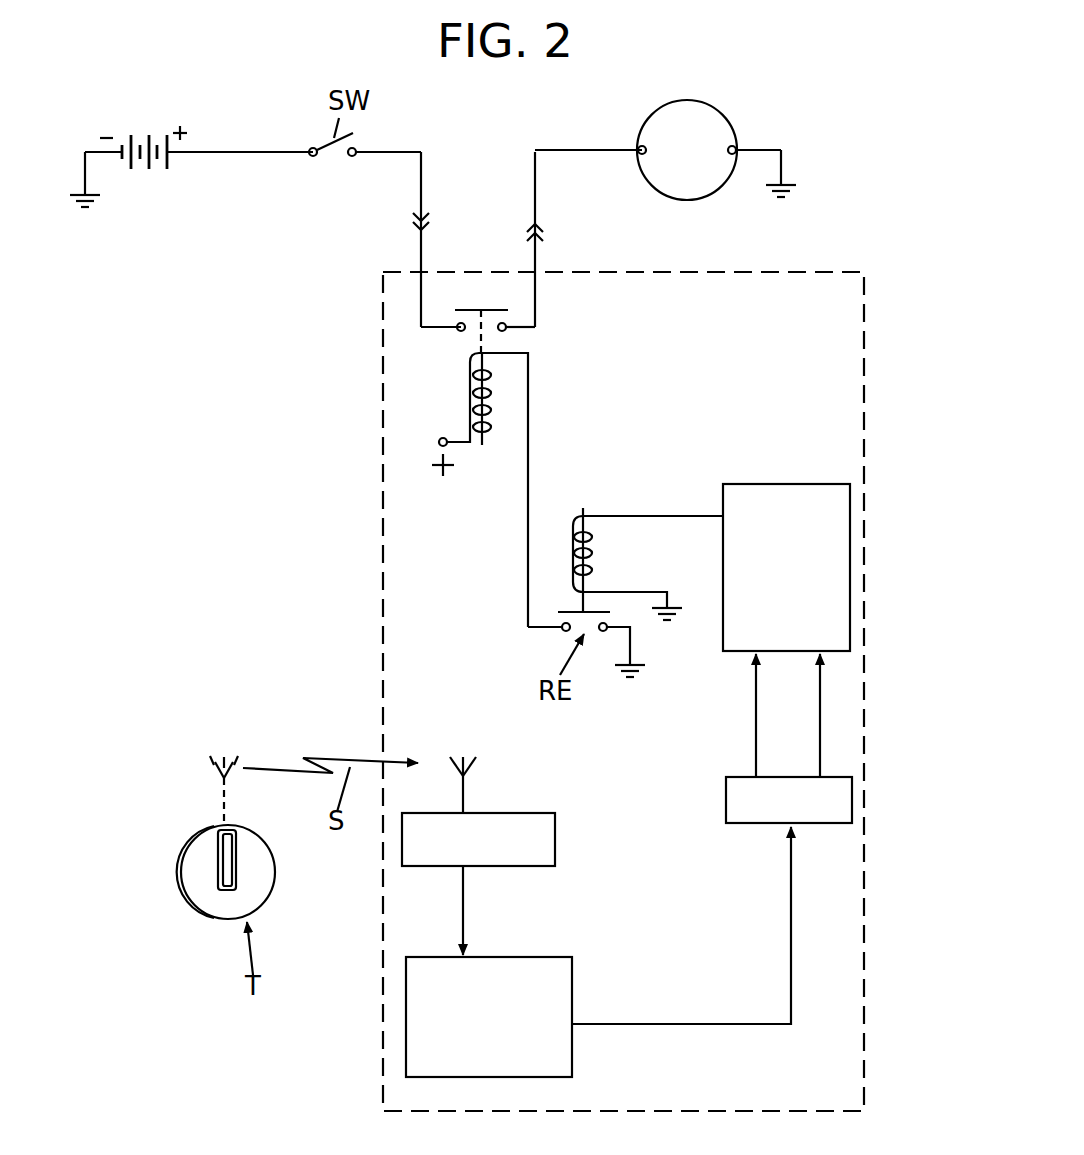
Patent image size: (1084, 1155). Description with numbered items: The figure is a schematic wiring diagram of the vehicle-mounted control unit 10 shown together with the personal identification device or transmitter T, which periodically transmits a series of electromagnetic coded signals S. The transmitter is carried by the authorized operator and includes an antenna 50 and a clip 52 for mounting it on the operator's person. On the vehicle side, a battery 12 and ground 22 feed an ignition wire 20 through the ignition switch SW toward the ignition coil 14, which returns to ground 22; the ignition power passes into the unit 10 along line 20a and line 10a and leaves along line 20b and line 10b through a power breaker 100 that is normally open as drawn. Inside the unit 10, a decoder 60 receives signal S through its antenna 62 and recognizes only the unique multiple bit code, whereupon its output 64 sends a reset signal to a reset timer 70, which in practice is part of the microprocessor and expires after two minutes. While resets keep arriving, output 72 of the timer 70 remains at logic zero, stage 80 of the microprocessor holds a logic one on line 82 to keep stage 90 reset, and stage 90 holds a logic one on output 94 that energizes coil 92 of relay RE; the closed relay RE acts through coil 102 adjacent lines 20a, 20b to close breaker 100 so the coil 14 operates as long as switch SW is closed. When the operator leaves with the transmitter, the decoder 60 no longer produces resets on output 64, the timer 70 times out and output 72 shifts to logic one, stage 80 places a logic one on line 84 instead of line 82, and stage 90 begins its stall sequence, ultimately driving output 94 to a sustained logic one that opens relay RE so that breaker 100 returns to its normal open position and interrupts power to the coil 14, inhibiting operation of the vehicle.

The control unit 10 is at (784, 266).
The line 10a is at (418, 246).
The line 10b is at (537, 255).
The battery 12 is at (154, 132).
The coil 14 is at (723, 108).
The ignition wire 20 is at (230, 152).
The line 20a is at (418, 205).
The line 20b is at (537, 212).
The ground 22 is at (103, 154).
The antenna 50 is at (218, 800).
The clip 52 is at (230, 866).
The decoder 60 is at (548, 833).
The antenna 62 is at (465, 789).
The output 64 is at (465, 903).
The reset timer 70 is at (562, 965).
The output 72 is at (652, 1022).
The stage 80 is at (748, 815).
The line 82 is at (752, 686).
The line 84 is at (822, 700).
The stage 90 is at (750, 494).
The coil 92 is at (598, 555).
The output 94 is at (658, 510).
The breaker 100 is at (510, 313).
The coil 102 is at (488, 393).